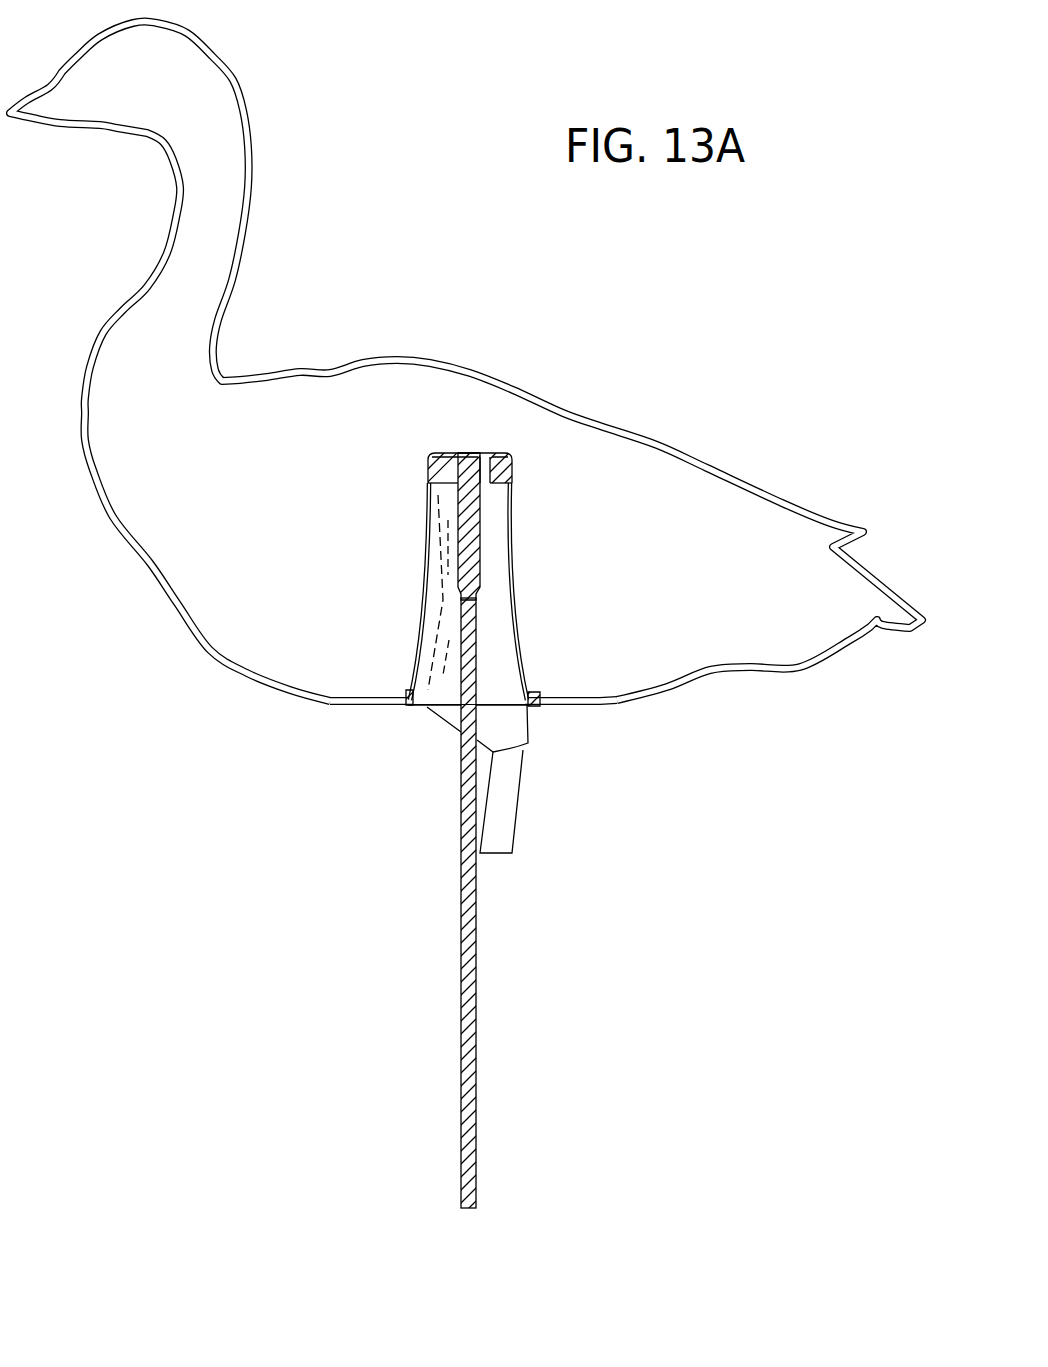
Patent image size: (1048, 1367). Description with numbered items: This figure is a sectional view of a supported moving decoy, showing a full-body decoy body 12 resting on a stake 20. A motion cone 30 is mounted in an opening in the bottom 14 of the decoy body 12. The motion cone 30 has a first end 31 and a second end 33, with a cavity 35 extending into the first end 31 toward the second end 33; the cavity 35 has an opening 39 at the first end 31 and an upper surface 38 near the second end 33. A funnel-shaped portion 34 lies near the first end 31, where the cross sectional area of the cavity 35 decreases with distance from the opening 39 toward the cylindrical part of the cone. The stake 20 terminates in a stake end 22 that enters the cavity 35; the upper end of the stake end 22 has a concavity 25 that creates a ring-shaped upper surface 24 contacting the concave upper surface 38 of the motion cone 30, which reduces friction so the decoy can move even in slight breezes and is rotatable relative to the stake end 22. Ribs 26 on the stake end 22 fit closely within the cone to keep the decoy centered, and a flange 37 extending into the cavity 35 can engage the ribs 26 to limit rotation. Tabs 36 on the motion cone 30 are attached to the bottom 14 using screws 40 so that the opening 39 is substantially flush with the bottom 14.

The decoy body 12 is at (383, 358).
The bottom 14 is at (375, 707).
The stake 20 is at (460, 952).
The stake end 22 is at (489, 537).
The ring-shaped upper surface 24 is at (485, 455).
The concavity 25 is at (467, 455).
The ribs 26 is at (425, 492).
The motion cone 30 is at (531, 452).
The first end 31 is at (410, 693).
The second end 33 is at (428, 474).
The funnel-shaped portion 34 is at (423, 643).
The cavity 35 is at (503, 652).
The tabs 36 is at (543, 707).
The flange 37 is at (509, 486).
The upper surface 38 is at (442, 453).
The opening 39 is at (423, 707).
The screws 40 is at (536, 694).